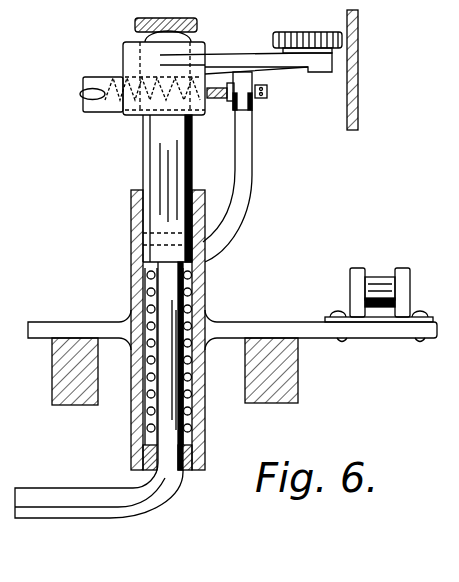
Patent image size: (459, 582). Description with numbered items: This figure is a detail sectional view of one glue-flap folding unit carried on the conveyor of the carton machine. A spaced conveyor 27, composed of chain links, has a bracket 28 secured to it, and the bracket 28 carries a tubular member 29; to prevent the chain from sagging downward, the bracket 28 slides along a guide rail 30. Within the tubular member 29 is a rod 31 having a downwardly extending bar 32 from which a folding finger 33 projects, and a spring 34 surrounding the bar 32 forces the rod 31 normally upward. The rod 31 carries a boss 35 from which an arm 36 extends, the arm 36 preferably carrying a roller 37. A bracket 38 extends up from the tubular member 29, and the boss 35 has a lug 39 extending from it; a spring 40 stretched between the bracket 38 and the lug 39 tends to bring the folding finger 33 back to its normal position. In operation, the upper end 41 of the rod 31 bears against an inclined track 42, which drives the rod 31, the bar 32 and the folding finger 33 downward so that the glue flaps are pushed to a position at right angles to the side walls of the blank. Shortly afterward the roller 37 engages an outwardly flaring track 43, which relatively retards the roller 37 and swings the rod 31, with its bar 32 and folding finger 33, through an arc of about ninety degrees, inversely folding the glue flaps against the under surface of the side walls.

The spaced conveyor 27 is at (368, 270).
The bracket 28 is at (240, 320).
The tubular member 29 is at (207, 270).
The guide rail 30 is at (53, 376).
The rod 31 is at (143, 156).
The downwardly extending bar 32 is at (182, 490).
The folding finger 33 is at (55, 503).
The spring 34 is at (131, 383).
The boss 35 is at (196, 50).
The arm 36 is at (222, 52).
The roller 37 is at (283, 33).
The bracket 38 is at (245, 160).
The lug 39 is at (103, 113).
The spring 40 is at (213, 102).
The upper end 41 is at (145, 38).
The inclined track 42 is at (135, 24).
The outwardly flaring track 43 is at (358, 24).